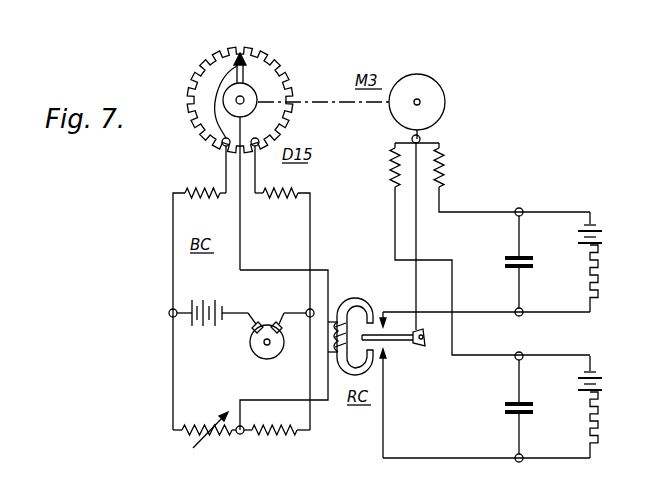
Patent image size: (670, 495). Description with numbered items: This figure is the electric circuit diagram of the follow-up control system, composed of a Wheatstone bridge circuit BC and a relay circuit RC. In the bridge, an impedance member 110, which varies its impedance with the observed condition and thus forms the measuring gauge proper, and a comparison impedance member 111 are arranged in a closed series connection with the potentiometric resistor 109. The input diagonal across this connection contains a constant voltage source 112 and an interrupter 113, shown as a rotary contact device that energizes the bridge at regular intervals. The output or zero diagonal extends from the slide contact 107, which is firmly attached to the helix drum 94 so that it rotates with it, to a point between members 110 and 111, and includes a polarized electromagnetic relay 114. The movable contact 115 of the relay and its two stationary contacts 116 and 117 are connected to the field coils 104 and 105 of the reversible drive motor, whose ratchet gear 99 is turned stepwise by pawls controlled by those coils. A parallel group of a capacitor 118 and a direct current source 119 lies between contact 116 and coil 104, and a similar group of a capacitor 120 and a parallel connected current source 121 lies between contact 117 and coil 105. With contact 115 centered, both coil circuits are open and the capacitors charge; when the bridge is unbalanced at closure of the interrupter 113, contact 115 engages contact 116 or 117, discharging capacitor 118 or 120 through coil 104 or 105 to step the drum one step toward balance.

The drum 94 is at (247, 94).
The ratchet gear 99 is at (433, 86).
The field coil 104 is at (391, 158).
The field coil 105 is at (443, 162).
The slide contact 107 is at (235, 59).
The potentiometric resistor 109 is at (273, 75).
The impedance member 110 is at (211, 437).
The impedance member 111 is at (287, 436).
The constant voltage source 112 is at (221, 304).
The interrupter 113 is at (162, 361).
The polarized electromagnetic relay 114 is at (336, 322).
The movable contact 115 is at (385, 336).
The stationary contact 116 is at (386, 353).
The stationary contact 117 is at (485, 310).
The capacitor 118 is at (507, 404).
The direct current source 119 is at (599, 377).
The capacitor 120 is at (507, 258).
The current source 121 is at (599, 231).